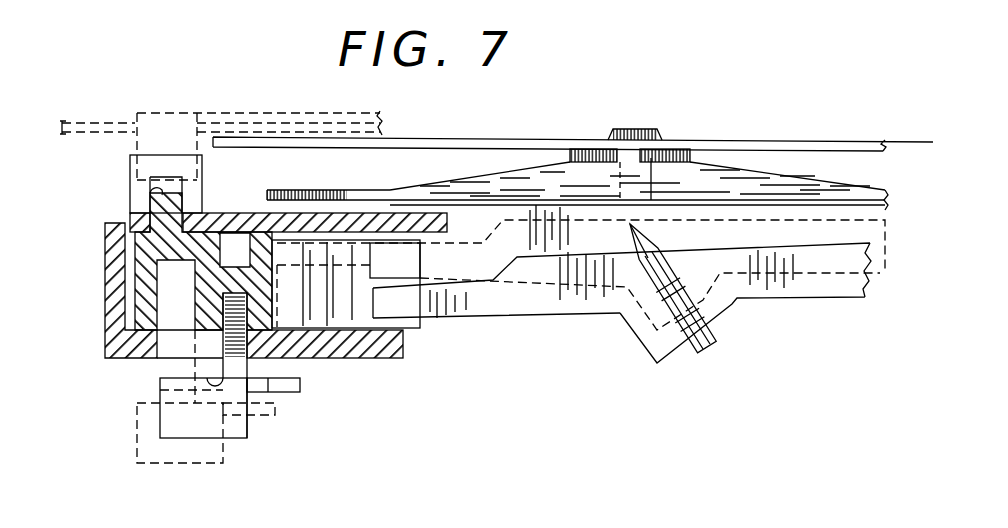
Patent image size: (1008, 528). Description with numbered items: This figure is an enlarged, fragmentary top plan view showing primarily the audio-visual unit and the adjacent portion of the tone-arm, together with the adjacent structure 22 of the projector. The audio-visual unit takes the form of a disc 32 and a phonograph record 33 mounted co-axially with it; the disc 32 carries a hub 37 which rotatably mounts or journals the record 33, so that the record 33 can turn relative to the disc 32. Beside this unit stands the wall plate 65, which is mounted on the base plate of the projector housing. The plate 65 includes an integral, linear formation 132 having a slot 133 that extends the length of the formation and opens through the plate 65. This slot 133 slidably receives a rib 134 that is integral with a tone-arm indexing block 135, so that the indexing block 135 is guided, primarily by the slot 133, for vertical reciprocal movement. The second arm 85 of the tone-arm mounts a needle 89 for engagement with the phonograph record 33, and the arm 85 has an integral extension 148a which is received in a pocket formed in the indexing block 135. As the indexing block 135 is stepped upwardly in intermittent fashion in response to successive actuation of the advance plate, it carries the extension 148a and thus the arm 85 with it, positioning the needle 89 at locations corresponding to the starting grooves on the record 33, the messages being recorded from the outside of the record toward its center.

The top plate 22 is at (746, 100).
The disc 32 is at (543, 139).
The phonograph record 33 is at (830, 190).
The hub 37 is at (636, 130).
The wall plate 65 is at (253, 212).
The second arm 85 is at (810, 290).
The needle 89 is at (630, 237).
The linear formation 132 is at (130, 179).
The slot 133 is at (150, 196).
The rib 134 is at (135, 213).
The tone-arm indexing block 135 is at (344, 365).
The integral extension 148a is at (482, 313).